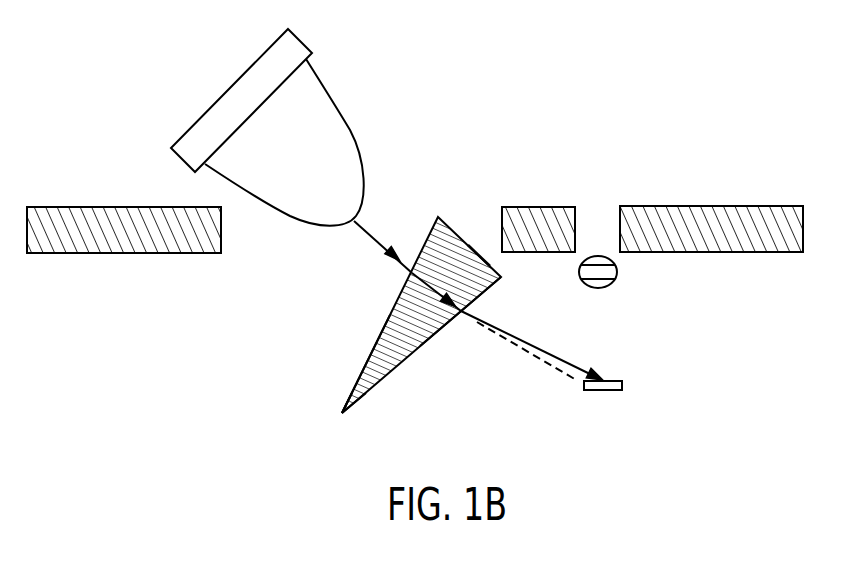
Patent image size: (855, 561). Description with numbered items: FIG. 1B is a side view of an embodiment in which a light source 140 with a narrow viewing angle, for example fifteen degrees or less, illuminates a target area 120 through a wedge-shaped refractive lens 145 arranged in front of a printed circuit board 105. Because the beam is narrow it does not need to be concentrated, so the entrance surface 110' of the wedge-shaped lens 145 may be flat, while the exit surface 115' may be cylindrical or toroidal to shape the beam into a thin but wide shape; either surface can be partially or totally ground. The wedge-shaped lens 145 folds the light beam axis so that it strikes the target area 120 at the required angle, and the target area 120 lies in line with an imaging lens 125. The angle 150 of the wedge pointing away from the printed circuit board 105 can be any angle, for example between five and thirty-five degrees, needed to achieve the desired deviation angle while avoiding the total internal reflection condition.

The printed circuit board 105 is at (722, 205).
The entrance surface 110' is at (412, 315).
The exit surface 115' is at (460, 324).
The target area 120 is at (622, 383).
The imaging lens 125 is at (617, 272).
The light source 140 is at (350, 127).
The wedge-shaped refractive lens 145 is at (362, 377).
The angle 150 is at (342, 406).